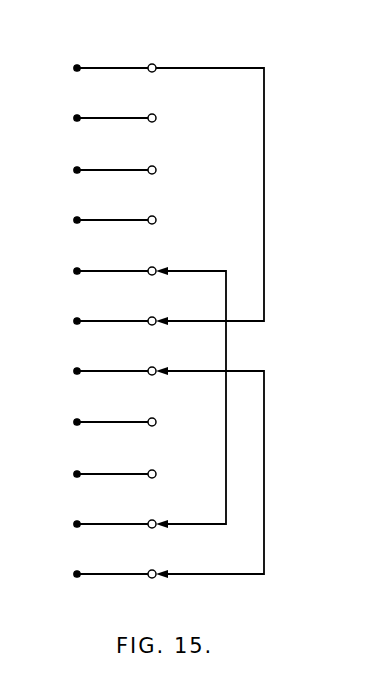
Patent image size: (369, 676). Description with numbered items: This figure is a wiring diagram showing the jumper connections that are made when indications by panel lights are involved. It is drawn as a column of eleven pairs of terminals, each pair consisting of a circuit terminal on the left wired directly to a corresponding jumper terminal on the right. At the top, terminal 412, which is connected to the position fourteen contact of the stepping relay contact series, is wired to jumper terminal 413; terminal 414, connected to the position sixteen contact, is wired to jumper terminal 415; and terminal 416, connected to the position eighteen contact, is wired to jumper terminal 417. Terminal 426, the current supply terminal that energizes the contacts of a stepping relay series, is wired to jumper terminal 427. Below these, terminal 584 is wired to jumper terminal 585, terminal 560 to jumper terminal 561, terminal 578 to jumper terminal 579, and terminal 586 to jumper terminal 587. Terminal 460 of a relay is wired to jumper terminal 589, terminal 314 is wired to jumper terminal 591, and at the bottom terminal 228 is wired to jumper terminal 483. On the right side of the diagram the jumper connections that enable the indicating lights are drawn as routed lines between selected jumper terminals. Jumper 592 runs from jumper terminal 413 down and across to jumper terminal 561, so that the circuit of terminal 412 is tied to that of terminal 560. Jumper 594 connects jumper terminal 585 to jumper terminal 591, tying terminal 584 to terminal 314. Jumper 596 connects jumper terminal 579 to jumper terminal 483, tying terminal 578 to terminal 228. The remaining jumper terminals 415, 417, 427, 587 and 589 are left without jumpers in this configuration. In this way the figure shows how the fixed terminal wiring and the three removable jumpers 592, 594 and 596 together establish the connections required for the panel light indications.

The terminal 412 is at (77, 66).
The jumper terminal 413 is at (148, 65).
The terminal 414 is at (77, 116).
The jumper terminal 415 is at (148, 115).
The terminal 416 is at (77, 168).
The jumper terminal 417 is at (148, 167).
The terminal 426 is at (77, 218).
The jumper terminal 427 is at (148, 217).
The terminal 584 is at (77, 269).
The jumper terminal 585 is at (148, 268).
The terminal 560 is at (77, 319).
The jumper terminal 561 is at (148, 318).
The terminal 578 is at (77, 369).
The jumper terminal 579 is at (148, 368).
The terminal 586 is at (77, 420).
The jumper terminal 587 is at (148, 419).
The terminal of relay 460 is at (77, 472).
The jumper terminal 589 is at (148, 471).
The terminal 314 is at (77, 522).
The jumper terminal 591 is at (148, 521).
The terminal 228 is at (77, 572).
The jumper terminal 483 is at (148, 571).
The jumper 592 is at (264, 170).
The jumper 594 is at (226, 356).
The jumper 596 is at (264, 493).